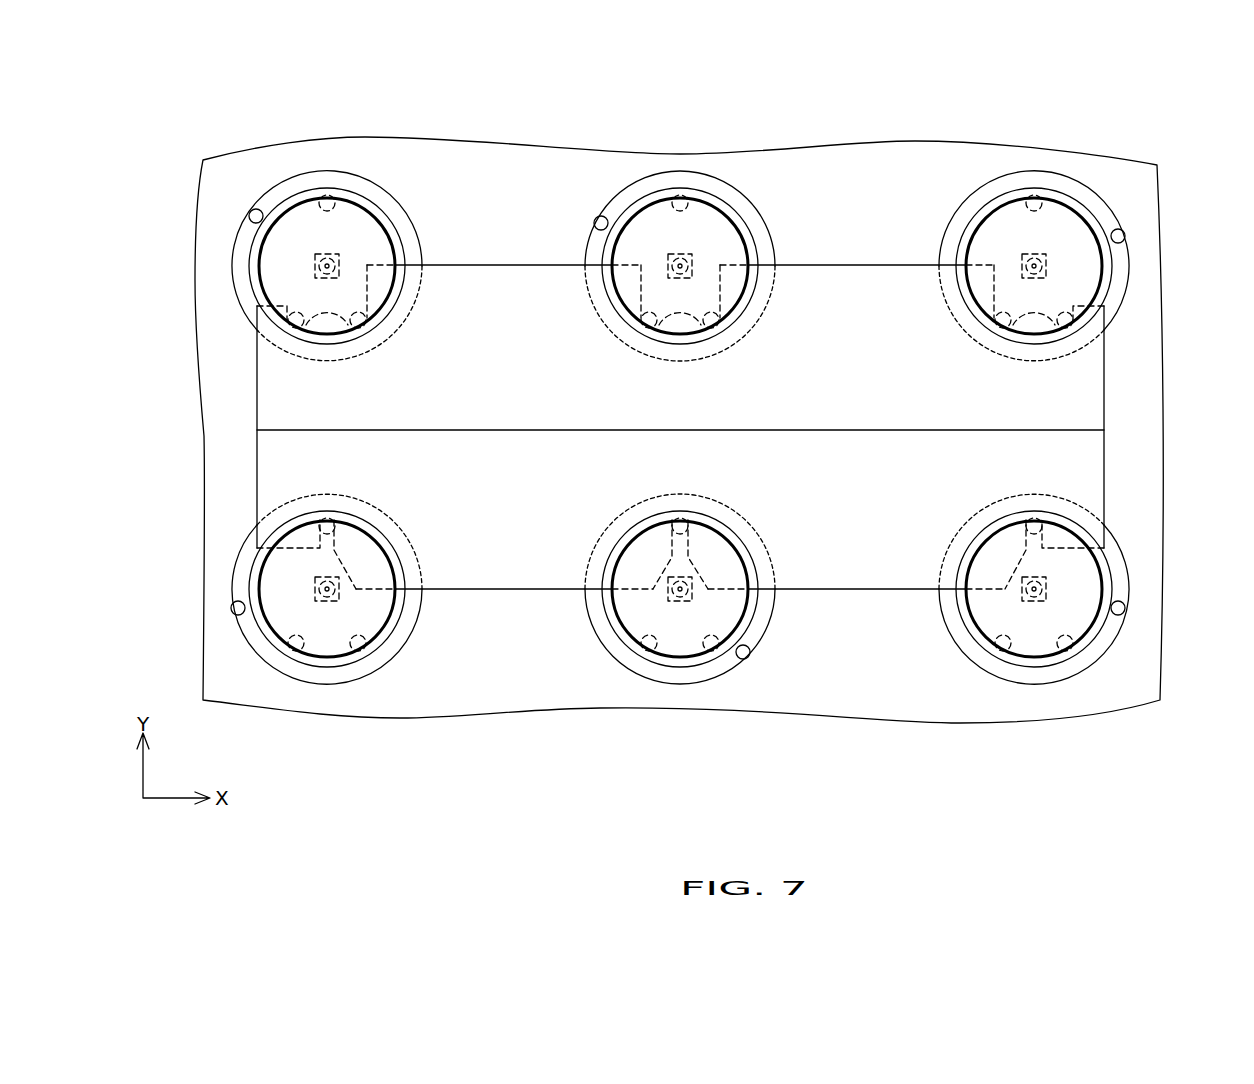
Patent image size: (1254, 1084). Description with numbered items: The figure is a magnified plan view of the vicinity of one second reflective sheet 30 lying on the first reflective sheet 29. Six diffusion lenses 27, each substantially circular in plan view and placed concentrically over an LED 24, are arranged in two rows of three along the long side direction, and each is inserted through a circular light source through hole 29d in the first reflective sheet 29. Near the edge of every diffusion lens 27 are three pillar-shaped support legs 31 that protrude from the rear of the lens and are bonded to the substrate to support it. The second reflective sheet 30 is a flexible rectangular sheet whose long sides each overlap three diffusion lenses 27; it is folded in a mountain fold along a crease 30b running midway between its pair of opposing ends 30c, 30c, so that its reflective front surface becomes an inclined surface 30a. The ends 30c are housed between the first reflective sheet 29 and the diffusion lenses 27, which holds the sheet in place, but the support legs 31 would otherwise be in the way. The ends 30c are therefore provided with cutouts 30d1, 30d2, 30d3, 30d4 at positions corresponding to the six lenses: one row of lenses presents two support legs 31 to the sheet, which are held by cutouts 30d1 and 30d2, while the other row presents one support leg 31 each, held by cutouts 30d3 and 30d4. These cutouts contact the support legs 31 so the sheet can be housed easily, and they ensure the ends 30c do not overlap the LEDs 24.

The LED 24 is at (316, 266).
The diffusion lens 27 is at (305, 232).
The first reflective sheet 29 is at (1147, 485).
The light source through hole 29d is at (256, 209).
The second reflective sheet 30 is at (680, 311).
The inclined surface 30a is at (823, 311).
The crease 30b is at (460, 430).
The end 30c is at (896, 264).
The cutout 30d1 is at (366, 300).
The cutout 30d2 is at (643, 293).
The cutout 30d3 is at (293, 552).
The cutout 30d4 is at (689, 562).
The support leg 31 is at (716, 313).